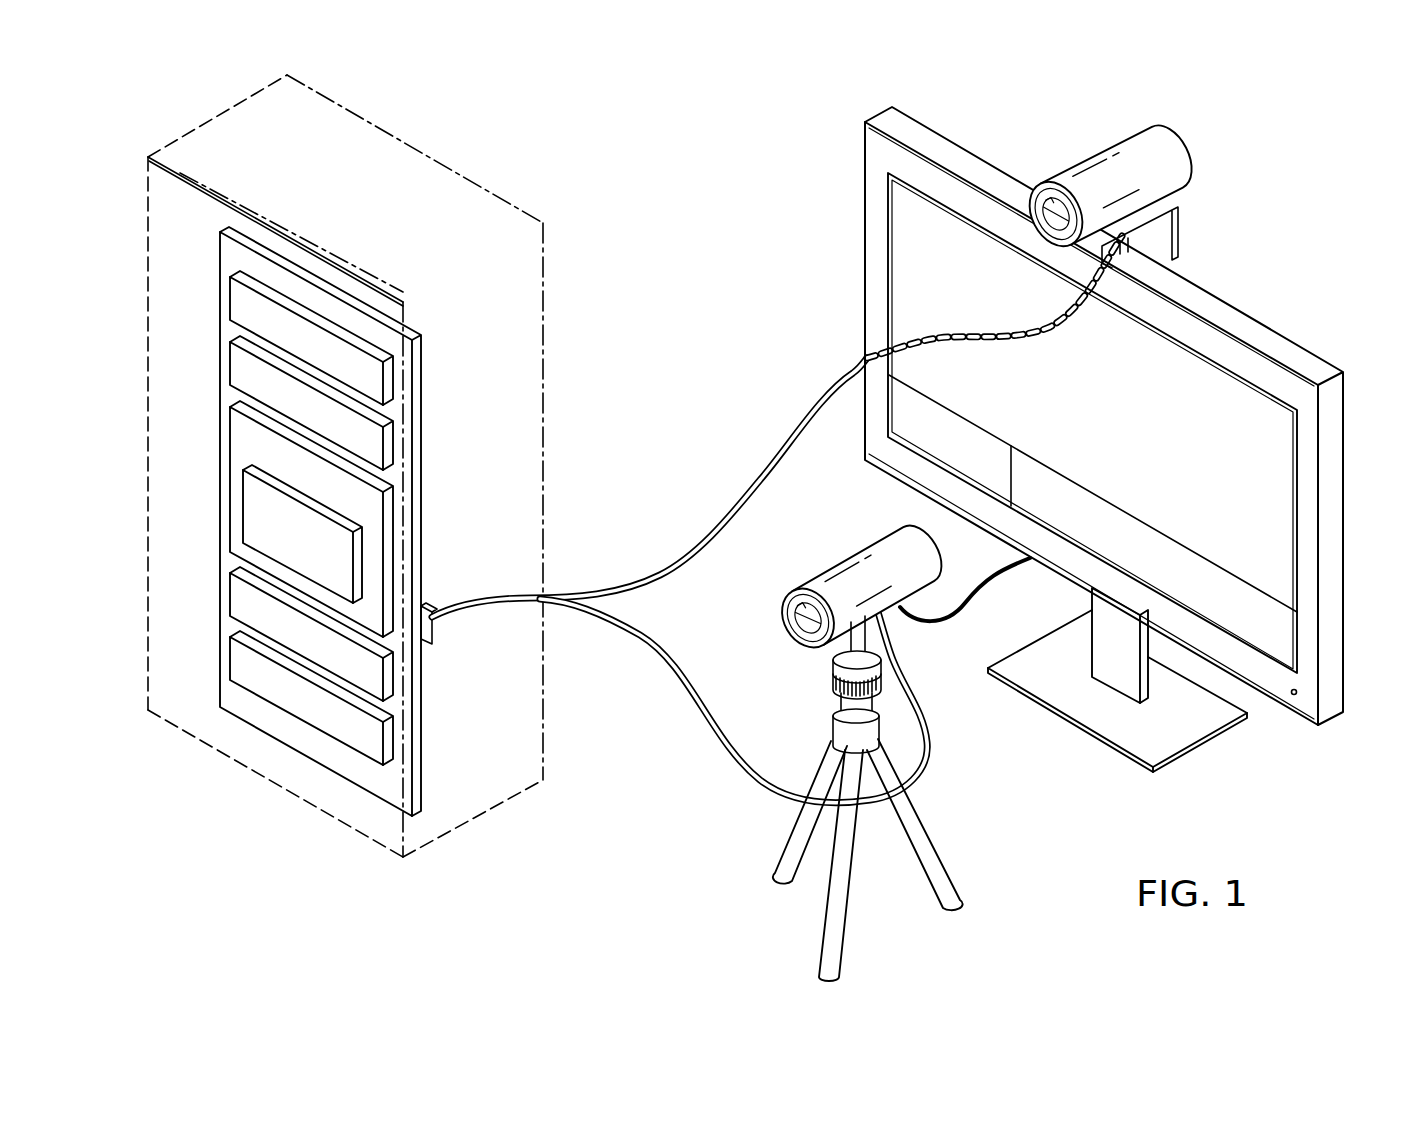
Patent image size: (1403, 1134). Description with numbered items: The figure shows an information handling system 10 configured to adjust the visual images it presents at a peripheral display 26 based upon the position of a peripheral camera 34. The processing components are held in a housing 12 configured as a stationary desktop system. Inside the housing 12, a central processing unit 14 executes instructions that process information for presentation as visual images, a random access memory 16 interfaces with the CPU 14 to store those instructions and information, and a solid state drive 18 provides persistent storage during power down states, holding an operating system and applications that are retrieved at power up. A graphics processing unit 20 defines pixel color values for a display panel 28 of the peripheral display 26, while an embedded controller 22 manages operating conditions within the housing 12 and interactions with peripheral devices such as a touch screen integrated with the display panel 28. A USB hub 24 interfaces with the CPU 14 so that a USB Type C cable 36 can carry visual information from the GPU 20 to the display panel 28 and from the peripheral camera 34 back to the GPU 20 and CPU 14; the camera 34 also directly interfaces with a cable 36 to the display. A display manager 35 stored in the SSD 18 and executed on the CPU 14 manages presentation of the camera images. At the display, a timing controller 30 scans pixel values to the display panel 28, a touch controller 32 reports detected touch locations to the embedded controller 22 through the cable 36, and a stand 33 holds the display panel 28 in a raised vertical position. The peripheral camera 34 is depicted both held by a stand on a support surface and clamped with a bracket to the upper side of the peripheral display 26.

The information handling system 10 is at (555, 852).
The housing 12 is at (237, 762).
The central processing unit (CPU) 14 is at (237, 302).
The random access memory (RAM) 16 is at (237, 368).
The solid state drive (SSD) 18 is at (238, 467).
The graphics processing unit (GPU) 20 is at (237, 602).
The embedded controller 22 is at (237, 670).
The USB hub 24 is at (432, 634).
The peripheral display 26 is at (1266, 322).
The display panel 28 is at (913, 257).
The timing controller 30 is at (979, 432).
The touch controller 32 is at (1132, 520).
The stand 33 is at (1210, 742).
The peripheral camera 34 is at (830, 537).
The display manager 35 is at (247, 508).
The USB Type C cable 36 is at (687, 558).